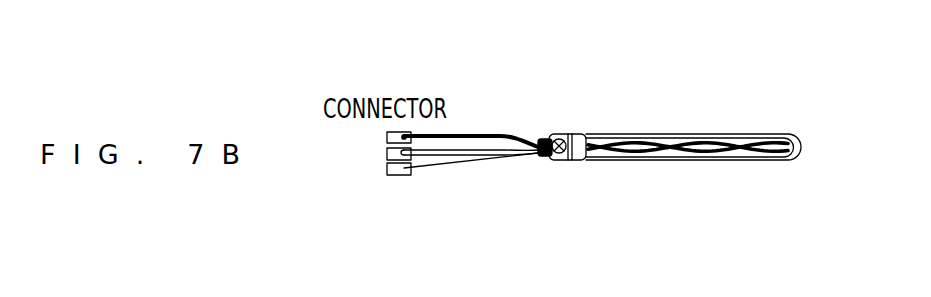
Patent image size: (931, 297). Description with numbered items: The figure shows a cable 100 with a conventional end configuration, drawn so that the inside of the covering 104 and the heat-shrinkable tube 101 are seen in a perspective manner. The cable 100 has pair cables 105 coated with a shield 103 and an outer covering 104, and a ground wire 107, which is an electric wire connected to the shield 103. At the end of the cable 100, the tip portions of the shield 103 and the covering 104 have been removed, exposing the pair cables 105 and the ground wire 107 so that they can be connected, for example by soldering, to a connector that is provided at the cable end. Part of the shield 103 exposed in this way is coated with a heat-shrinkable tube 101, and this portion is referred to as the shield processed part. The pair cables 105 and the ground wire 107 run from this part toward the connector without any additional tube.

The cable 100 is at (773, 113).
The heat-shrinkable tube 101 is at (554, 160).
The shield 103 is at (582, 110).
The covering 104 is at (631, 187).
The pair cables 105 is at (461, 150).
The ground wire 107 is at (441, 170).